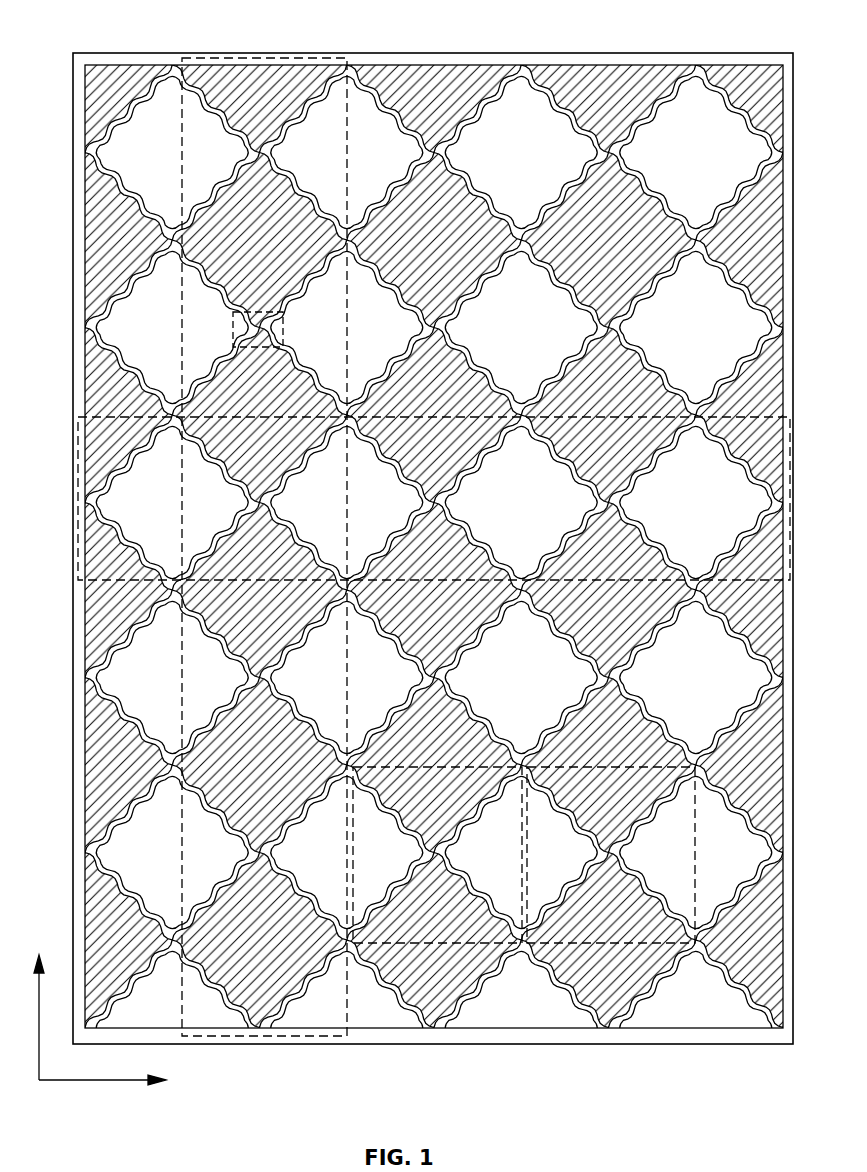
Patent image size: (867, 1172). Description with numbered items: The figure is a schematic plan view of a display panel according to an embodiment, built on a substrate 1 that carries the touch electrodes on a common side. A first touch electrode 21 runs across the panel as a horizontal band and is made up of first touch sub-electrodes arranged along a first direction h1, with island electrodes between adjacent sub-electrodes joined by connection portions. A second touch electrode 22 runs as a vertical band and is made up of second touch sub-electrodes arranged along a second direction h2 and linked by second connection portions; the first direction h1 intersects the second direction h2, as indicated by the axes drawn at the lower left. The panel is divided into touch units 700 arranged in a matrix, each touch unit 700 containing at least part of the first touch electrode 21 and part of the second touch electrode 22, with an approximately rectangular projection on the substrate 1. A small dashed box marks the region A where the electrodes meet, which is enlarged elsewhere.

The substrate 1 is at (440, 53).
The second touch electrode 22 is at (262, 58).
The first touch electrode 21 is at (78, 511).
The region A is at (232, 337).
The touch unit 700 is at (438, 1028).
The first direction h1 is at (118, 1079).
The second direction h2 is at (39, 1001).